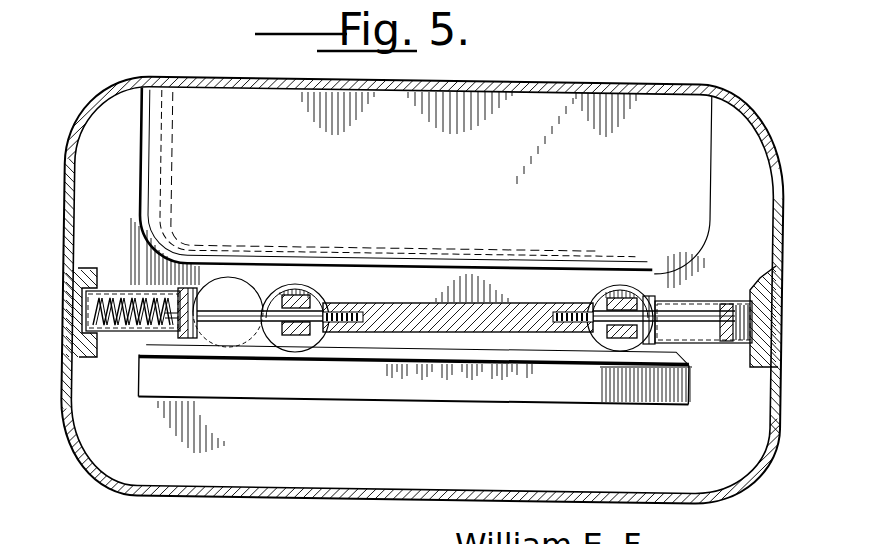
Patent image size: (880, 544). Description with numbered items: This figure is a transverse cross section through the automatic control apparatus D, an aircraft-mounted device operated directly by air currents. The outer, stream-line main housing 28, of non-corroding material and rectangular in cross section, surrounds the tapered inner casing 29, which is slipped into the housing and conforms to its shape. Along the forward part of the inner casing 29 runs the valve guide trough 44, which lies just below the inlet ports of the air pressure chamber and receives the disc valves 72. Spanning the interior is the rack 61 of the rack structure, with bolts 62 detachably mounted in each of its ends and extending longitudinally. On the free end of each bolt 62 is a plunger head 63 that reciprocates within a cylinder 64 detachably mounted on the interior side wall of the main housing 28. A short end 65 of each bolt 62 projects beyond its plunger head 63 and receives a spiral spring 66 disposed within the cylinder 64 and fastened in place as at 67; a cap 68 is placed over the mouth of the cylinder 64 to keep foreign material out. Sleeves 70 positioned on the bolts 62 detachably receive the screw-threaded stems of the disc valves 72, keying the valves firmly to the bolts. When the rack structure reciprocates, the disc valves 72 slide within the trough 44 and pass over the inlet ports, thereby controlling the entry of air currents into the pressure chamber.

The main housing 28 is at (284, 503).
The inner casing 29 is at (725, 160).
The automatic control apparatus D is at (612, 86).
The valve guide trough 44 is at (413, 399).
The rack 61 is at (398, 304).
The bolts 62 is at (233, 322).
The plunger heads 63 is at (187, 288).
The cylinders 64 is at (119, 290).
The short end 65 is at (182, 338).
The spiral spring 66 is at (145, 333).
The fastening 67 is at (64, 336).
The caps 68 is at (222, 282).
The sleeves 70 is at (303, 335).
The disc valves 72 is at (303, 285).